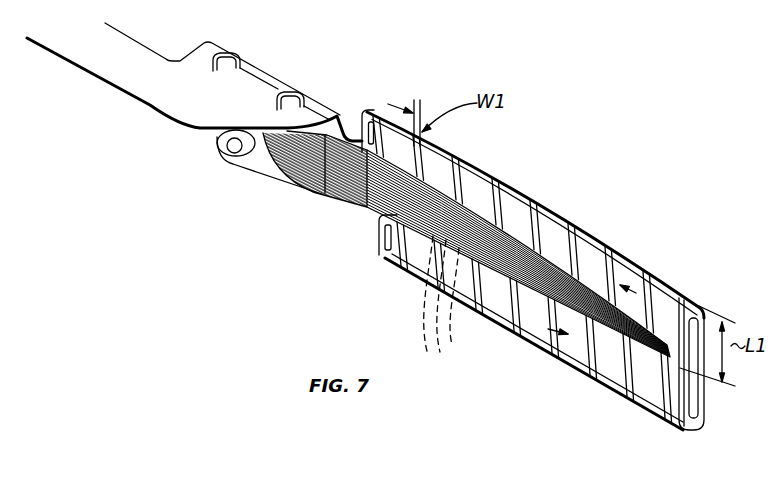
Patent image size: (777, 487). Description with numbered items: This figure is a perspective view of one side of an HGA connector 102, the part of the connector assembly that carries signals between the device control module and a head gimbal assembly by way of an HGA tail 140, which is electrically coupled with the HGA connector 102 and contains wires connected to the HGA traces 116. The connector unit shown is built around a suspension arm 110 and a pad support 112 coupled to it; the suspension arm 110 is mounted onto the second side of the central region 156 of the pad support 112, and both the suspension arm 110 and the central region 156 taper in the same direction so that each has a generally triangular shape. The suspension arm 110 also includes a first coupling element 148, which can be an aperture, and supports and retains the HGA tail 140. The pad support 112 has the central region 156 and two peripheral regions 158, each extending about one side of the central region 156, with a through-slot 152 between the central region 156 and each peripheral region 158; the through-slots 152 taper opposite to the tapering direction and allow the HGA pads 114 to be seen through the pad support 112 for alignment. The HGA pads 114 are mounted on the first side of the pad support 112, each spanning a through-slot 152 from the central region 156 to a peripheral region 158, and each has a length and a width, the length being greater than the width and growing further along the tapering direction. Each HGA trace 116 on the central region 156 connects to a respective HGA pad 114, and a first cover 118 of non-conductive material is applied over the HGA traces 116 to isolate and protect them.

The HGA connector 102 is at (703, 270).
The suspension arm 110 is at (267, 168).
The pad support 112 is at (474, 178).
The HGA pads 114 is at (578, 236).
The HGA traces 116 is at (440, 348).
The first cover 118 is at (383, 193).
The HGA tail 140 is at (277, 87).
The first coupling element 148 is at (236, 156).
The through-slot 152 is at (648, 282).
The central region 156 is at (503, 232).
The peripheral regions 158 is at (622, 256).